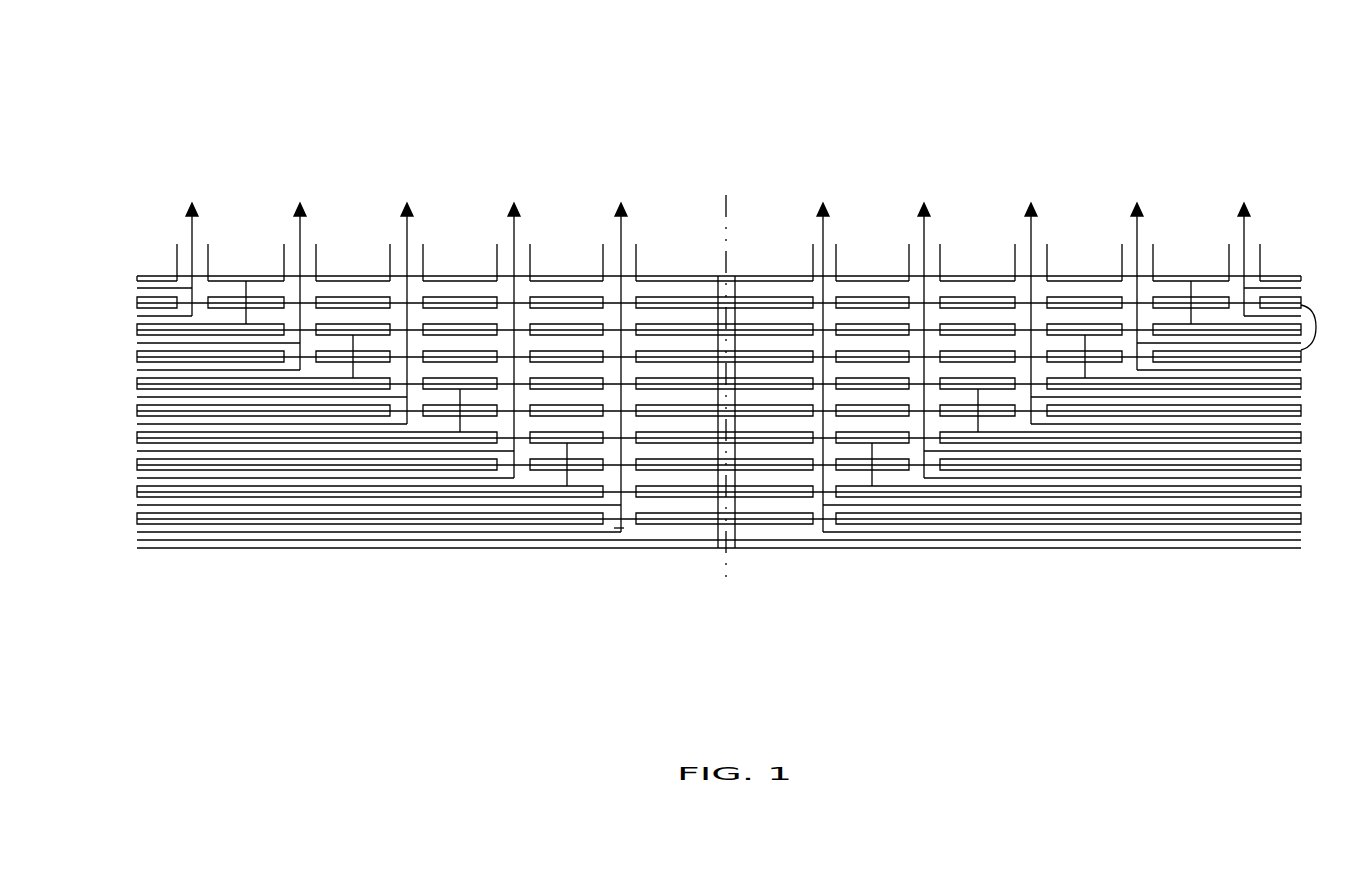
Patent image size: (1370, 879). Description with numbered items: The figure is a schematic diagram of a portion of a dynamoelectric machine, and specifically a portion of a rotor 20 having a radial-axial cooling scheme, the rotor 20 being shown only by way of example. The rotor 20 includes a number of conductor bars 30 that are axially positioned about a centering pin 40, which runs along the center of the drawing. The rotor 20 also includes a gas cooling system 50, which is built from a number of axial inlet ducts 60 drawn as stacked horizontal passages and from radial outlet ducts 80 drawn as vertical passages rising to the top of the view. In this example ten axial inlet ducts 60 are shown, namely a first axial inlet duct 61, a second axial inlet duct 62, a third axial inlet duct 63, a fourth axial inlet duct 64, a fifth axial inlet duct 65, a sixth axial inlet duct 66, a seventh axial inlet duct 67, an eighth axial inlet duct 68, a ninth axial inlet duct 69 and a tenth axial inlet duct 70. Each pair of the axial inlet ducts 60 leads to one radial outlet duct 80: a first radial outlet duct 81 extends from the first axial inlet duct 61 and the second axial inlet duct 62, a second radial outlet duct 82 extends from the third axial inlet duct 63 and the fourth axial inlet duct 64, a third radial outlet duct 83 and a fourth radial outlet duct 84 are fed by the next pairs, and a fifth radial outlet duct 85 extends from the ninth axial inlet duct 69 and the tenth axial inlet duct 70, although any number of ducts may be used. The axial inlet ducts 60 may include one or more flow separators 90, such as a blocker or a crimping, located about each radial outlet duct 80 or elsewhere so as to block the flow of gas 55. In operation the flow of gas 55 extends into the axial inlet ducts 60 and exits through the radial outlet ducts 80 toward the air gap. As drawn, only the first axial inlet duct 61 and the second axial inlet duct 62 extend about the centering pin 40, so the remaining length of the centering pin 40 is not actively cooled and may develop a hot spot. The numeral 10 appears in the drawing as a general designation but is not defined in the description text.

The stacked interconnect structure 10 is at (137, 87).
The rotor 20 is at (455, 549).
The conductor bars 30 is at (1316, 327).
The centering pin 40 is at (724, 183).
The gas cooling system 50 is at (327, 541).
The flow of gas 55 is at (1244, 240).
The axial inlet ducts 60 is at (200, 534).
The first axial inlet duct 61 is at (138, 532).
The second axial inlet duct 62 is at (138, 505).
The third axial inlet duct 63 is at (138, 478).
The fourth axial inlet duct 64 is at (138, 451).
The fifth axial inlet duct 65 is at (138, 424).
The sixth axial inlet duct 66 is at (138, 397).
The seventh axial inlet duct 67 is at (138, 370).
The eighth axial inlet duct 68 is at (138, 343).
The ninth axial inlet duct 69 is at (138, 316).
The tenth axial inlet duct 70 is at (138, 288).
The radial outlet duct 80 is at (627, 533).
The first radial outlet duct 81 is at (621, 240).
The second radial outlet duct 82 is at (514, 240).
The third radial outlet duct 83 is at (407, 240).
The fourth radial outlet duct 84 is at (300, 240).
The fifth radial outlet duct 85 is at (192, 240).
The flow separators 90 is at (1192, 323).